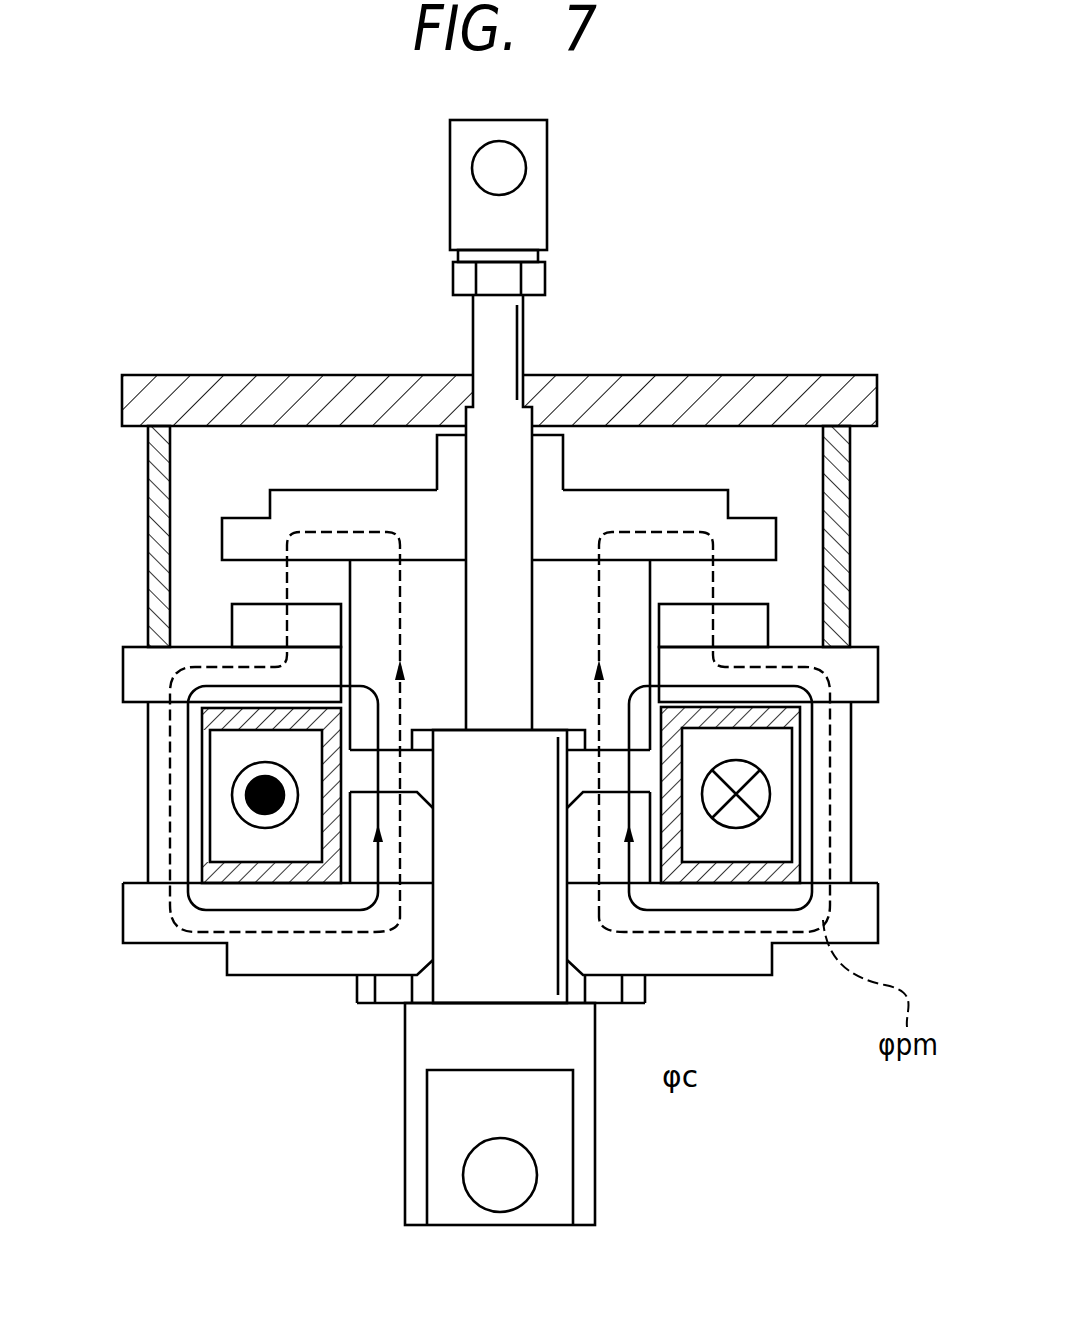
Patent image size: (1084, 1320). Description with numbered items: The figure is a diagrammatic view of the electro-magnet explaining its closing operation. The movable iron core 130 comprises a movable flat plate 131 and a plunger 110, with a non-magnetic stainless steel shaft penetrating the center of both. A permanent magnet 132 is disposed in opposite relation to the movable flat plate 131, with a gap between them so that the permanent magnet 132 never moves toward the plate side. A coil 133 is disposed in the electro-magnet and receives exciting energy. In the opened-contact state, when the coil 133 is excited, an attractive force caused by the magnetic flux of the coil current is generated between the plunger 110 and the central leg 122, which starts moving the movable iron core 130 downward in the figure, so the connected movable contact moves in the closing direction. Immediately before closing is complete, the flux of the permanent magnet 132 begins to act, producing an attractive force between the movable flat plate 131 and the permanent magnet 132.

The plunger 110 is at (435, 612).
The central leg 122 is at (390, 868).
The movable iron core 130 is at (499, 400).
The movable flat plate 131 is at (305, 512).
The permanent magnet 132 is at (245, 620).
The coil 133 is at (777, 843).